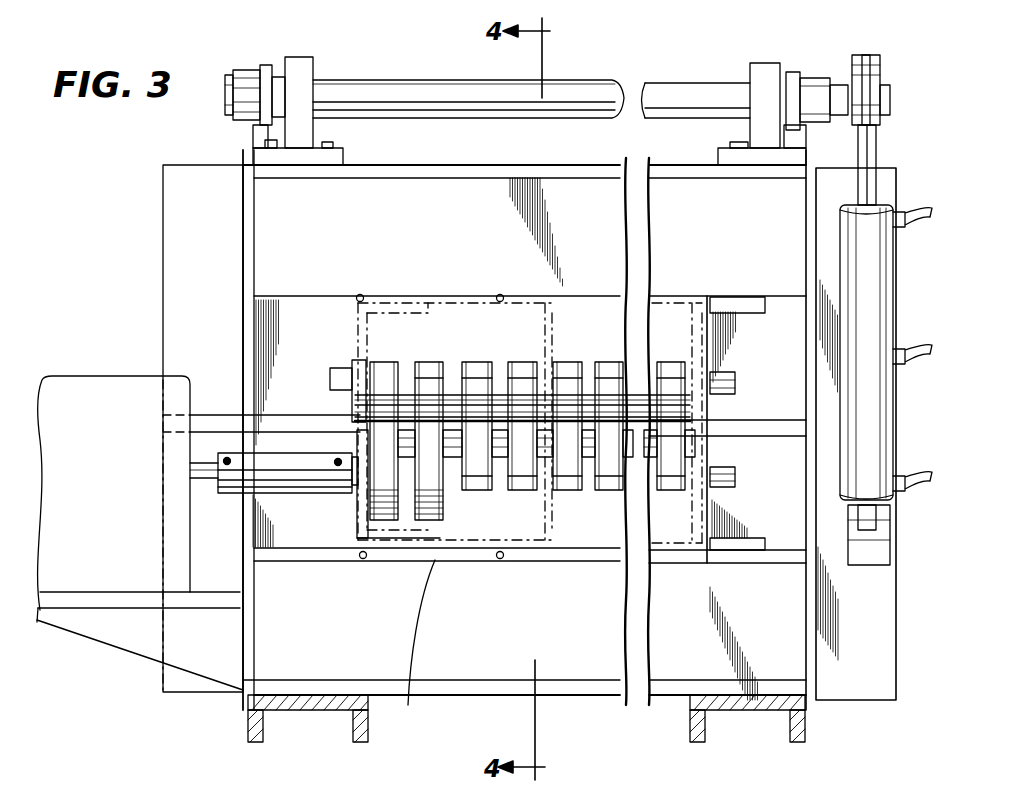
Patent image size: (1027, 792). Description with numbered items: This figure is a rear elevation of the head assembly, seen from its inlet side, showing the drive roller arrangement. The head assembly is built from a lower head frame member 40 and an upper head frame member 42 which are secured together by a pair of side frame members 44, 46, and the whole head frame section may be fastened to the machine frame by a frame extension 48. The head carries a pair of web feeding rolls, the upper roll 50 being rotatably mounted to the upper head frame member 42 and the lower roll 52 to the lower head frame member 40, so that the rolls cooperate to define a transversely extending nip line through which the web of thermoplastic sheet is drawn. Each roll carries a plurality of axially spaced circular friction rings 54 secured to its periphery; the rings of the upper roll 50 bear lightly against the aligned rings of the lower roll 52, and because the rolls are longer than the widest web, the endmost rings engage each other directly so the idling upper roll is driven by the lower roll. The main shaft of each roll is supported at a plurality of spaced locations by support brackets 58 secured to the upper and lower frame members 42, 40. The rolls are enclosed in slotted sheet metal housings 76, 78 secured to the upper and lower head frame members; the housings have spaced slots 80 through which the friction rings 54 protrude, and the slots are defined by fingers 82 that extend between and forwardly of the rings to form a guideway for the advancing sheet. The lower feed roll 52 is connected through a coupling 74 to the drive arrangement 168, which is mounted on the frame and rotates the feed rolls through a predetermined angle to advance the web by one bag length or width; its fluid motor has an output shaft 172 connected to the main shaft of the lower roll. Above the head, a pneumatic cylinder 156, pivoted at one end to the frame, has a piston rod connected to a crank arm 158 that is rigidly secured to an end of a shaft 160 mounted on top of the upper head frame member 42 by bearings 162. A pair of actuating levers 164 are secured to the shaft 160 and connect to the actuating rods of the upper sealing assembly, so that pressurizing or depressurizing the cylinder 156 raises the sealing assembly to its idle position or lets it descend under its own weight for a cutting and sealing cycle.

The lower head frame member 40 is at (445, 668).
The upper head frame member 42 is at (462, 185).
The side frame member 44 is at (243, 262).
The side frame member 46 is at (808, 642).
The frame extension 48 is at (365, 742).
The upper web feeding roll 50 is at (372, 366).
The lower web feeding roll 52 is at (400, 532).
The circular friction rings 54 is at (520, 362).
The support brackets 58 is at (362, 300).
The coupling 74 is at (288, 483).
The upper slotted sheet metal housing 76 is at (508, 360).
The lower slotted sheet metal housing 78 is at (408, 705).
The slots 80 is at (420, 380).
The fingers 82 is at (452, 374).
The pneumatic cylinder 156 is at (880, 272).
The crank arm 158 is at (882, 72).
The shaft 160 is at (565, 95).
The bearings 162 is at (300, 75).
The actuating levers 164 is at (244, 85).
The drive arrangement 168 is at (108, 380).
The output shaft 172 is at (205, 487).